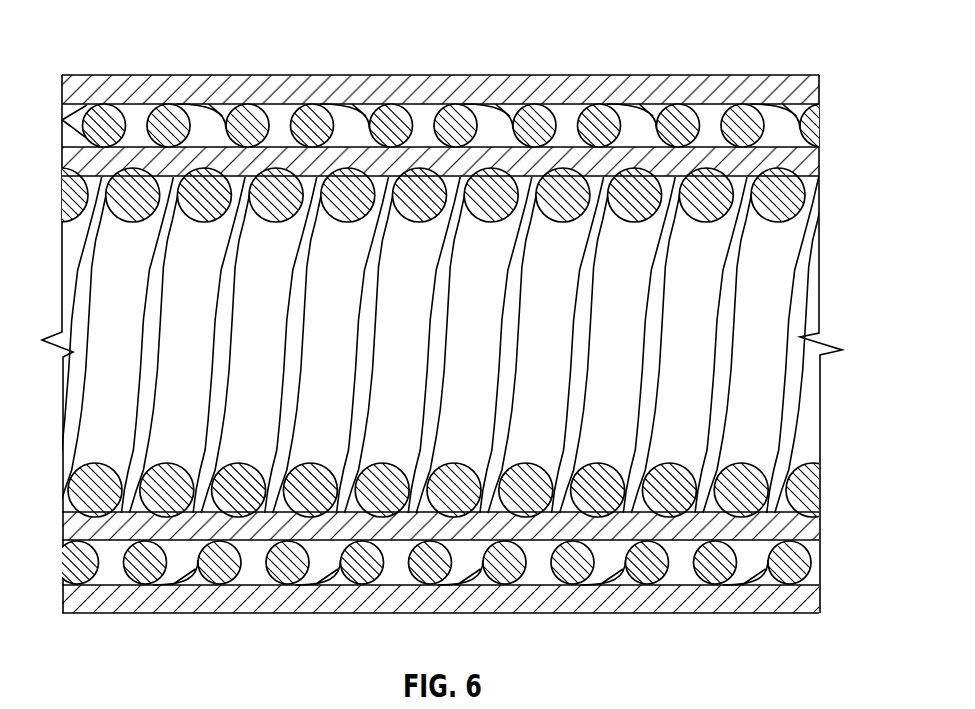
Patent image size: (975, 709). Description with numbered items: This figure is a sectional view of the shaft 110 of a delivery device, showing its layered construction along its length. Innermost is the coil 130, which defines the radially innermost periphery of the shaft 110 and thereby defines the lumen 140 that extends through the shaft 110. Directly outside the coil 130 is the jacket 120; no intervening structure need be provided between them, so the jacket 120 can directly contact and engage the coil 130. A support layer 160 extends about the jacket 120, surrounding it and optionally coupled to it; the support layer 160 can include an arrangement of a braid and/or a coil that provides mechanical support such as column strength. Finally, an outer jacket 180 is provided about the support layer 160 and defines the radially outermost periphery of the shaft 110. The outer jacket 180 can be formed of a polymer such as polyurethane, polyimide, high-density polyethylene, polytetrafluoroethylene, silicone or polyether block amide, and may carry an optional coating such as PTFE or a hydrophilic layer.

The shaft 110 is at (103, 40).
The jacket 120 is at (812, 163).
The coil 130 is at (793, 187).
The lumen 140 is at (802, 313).
The support layer 160 is at (678, 110).
The outer jacket 180 is at (812, 90).